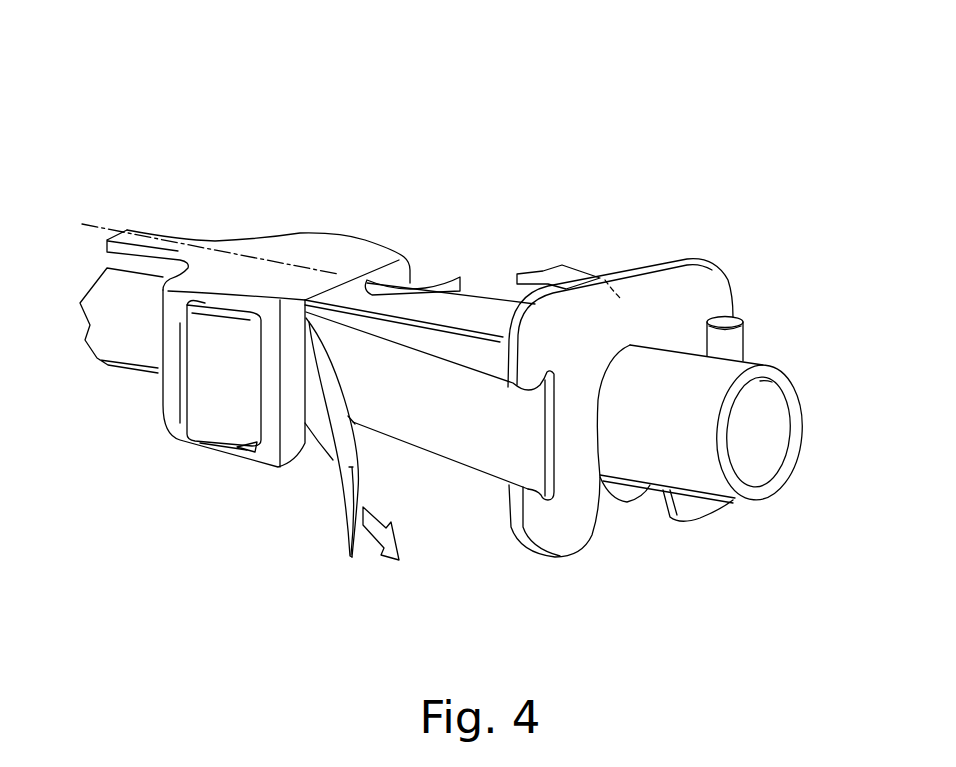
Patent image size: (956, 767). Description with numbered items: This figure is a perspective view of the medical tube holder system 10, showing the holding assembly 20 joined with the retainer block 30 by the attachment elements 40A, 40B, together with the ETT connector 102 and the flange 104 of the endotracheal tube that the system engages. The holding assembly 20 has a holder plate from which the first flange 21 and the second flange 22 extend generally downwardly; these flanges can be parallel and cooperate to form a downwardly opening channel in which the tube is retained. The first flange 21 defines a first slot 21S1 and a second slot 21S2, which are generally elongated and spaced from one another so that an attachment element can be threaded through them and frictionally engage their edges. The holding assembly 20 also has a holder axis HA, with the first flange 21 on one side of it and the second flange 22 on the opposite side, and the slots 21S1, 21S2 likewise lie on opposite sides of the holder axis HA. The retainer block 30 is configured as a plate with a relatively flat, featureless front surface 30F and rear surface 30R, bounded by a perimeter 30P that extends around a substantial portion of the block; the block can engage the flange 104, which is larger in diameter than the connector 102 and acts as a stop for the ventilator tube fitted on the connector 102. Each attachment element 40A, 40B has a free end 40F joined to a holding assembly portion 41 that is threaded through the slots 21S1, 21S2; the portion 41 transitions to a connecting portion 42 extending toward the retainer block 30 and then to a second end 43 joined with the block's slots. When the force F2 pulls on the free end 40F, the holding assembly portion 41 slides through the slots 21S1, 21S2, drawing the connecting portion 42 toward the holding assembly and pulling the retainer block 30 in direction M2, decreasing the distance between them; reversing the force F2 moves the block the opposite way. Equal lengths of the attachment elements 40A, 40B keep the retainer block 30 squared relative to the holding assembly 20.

The medical tube holder system 10 is at (525, 117).
The holding assembly 20 is at (312, 243).
The first flange 21 is at (175, 437).
The first slot 21S1 is at (187, 436).
The second slot 21S2 is at (253, 452).
The second flange 22 is at (357, 428).
The retainer block 30 is at (648, 256).
The rear surface 30R is at (603, 275).
The perimeter 30P is at (675, 260).
The front surface 30F is at (677, 287).
The attachment element 40A is at (458, 450).
The attachment element 40B is at (498, 297).
The free end 40F is at (350, 560).
The holding assembly portion 41 is at (197, 375).
The connecting portion 42 is at (468, 407).
The second end 43 is at (187, 313).
The ETT connector 102 is at (723, 373).
The flange 104 is at (623, 493).
The holder axis HA is at (192, 242).
The direction M2 is at (538, 270).
The force F2 is at (393, 560).